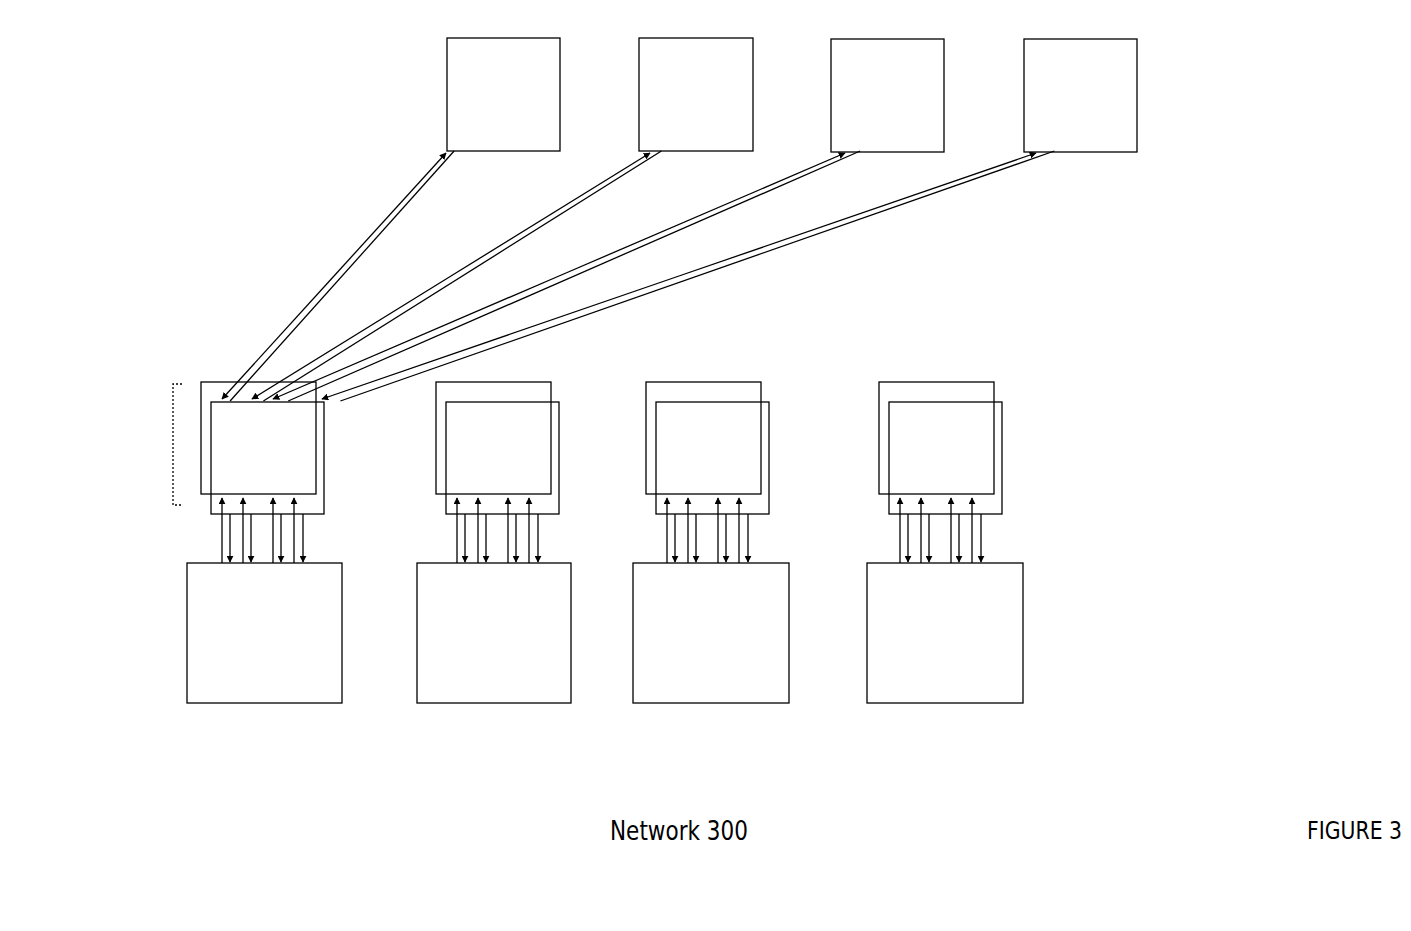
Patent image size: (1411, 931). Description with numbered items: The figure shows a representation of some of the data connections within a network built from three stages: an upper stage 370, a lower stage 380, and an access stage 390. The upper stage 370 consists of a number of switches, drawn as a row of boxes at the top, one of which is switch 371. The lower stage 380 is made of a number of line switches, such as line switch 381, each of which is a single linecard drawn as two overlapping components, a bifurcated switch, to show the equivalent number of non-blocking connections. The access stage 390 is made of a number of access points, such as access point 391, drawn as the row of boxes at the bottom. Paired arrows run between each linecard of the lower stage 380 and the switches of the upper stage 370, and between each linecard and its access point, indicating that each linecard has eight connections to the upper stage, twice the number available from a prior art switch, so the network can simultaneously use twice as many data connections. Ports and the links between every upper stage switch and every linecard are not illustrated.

The upper stage 370 is at (1005, 95).
The upper stage switch 371 is at (420, 100).
The lower stage 380 is at (904, 472).
The line switch 381 is at (173, 445).
The access stage 390 is at (894, 633).
The access point 391 is at (166, 635).